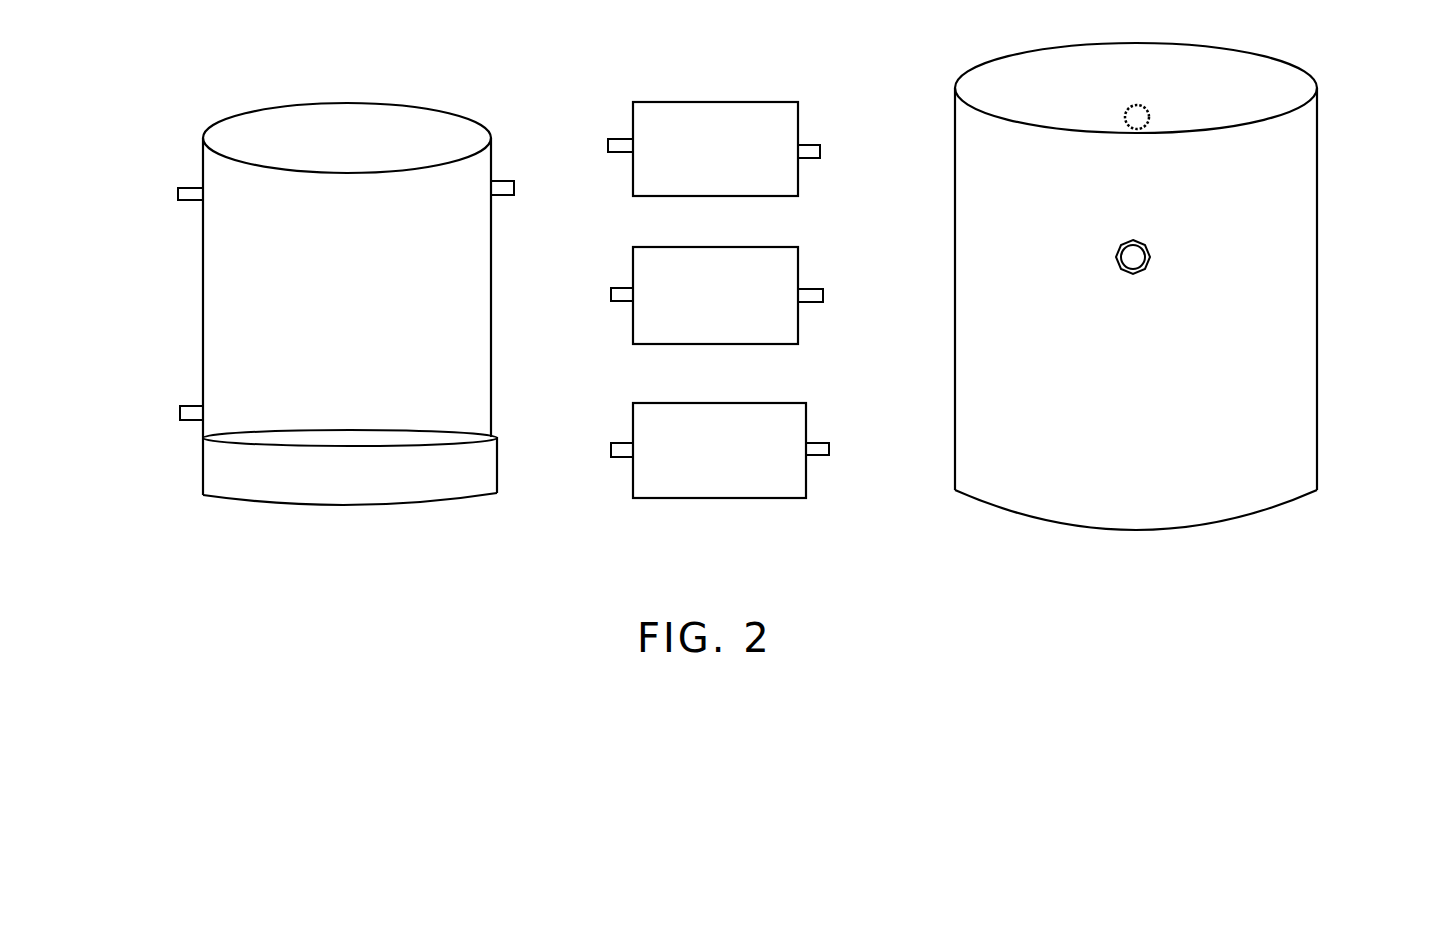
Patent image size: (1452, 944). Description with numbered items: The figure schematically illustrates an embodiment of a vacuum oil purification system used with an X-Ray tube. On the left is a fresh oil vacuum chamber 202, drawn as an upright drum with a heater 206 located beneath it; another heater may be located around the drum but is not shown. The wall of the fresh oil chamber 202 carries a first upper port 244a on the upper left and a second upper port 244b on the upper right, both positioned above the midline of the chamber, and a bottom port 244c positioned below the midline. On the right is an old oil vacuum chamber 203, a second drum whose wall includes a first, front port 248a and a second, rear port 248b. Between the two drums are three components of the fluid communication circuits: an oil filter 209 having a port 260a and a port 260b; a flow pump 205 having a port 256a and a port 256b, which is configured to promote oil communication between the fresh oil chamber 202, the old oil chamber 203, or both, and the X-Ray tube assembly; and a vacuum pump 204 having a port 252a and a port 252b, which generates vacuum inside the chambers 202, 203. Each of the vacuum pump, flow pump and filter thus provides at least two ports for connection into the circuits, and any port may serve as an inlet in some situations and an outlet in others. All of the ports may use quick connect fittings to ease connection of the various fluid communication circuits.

The fresh oil vacuum chamber 202 is at (232, 343).
The heater 206 is at (223, 479).
The first upper port 244a is at (177, 188).
The second upper port 244b is at (530, 155).
The bottom port 244c is at (178, 421).
The oil filter 209 is at (785, 188).
The port 260a is at (633, 124).
The port 260b is at (824, 135).
The flow pump 205 is at (780, 339).
The port 256a is at (609, 290).
The port 256b is at (826, 295).
The vacuum pump 204 is at (790, 500).
The port 252a is at (604, 449).
The port 252b is at (845, 439).
The old oil vacuum chamber 203 is at (1297, 349).
The first port 248a is at (1160, 247).
The second port 248b is at (1152, 110).